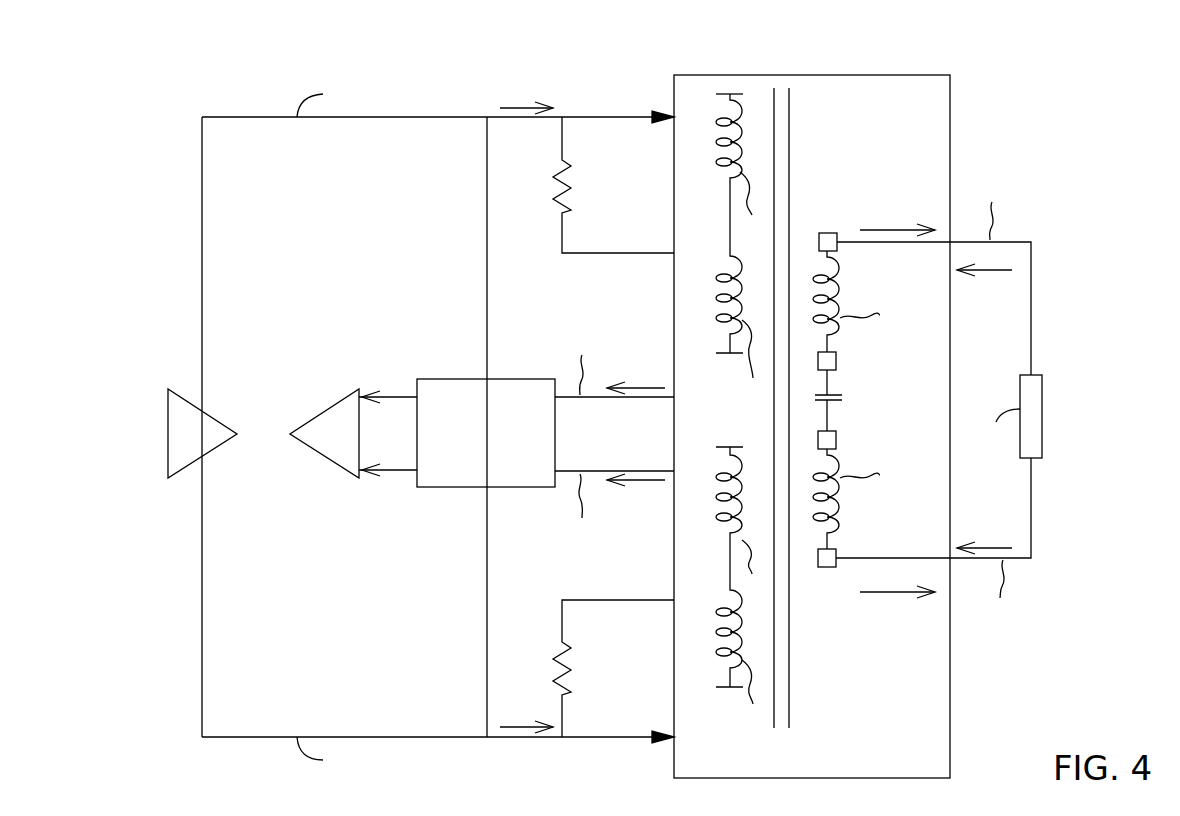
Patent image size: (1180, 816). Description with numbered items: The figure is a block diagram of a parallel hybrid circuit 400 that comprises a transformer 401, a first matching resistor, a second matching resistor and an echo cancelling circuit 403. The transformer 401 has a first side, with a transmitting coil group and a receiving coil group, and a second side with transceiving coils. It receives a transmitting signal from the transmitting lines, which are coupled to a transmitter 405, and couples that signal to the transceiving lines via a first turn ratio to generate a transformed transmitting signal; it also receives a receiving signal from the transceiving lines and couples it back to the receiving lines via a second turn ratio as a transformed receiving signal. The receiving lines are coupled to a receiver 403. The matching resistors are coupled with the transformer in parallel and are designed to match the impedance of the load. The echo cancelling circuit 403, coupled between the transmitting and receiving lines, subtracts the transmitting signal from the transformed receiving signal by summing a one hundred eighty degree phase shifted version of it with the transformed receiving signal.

The parallel hybrid circuit 400 is at (1056, 124).
The transformer 401 is at (952, 130).
The echo cancelling circuit 403 is at (327, 410).
The transmitter 405 is at (168, 433).